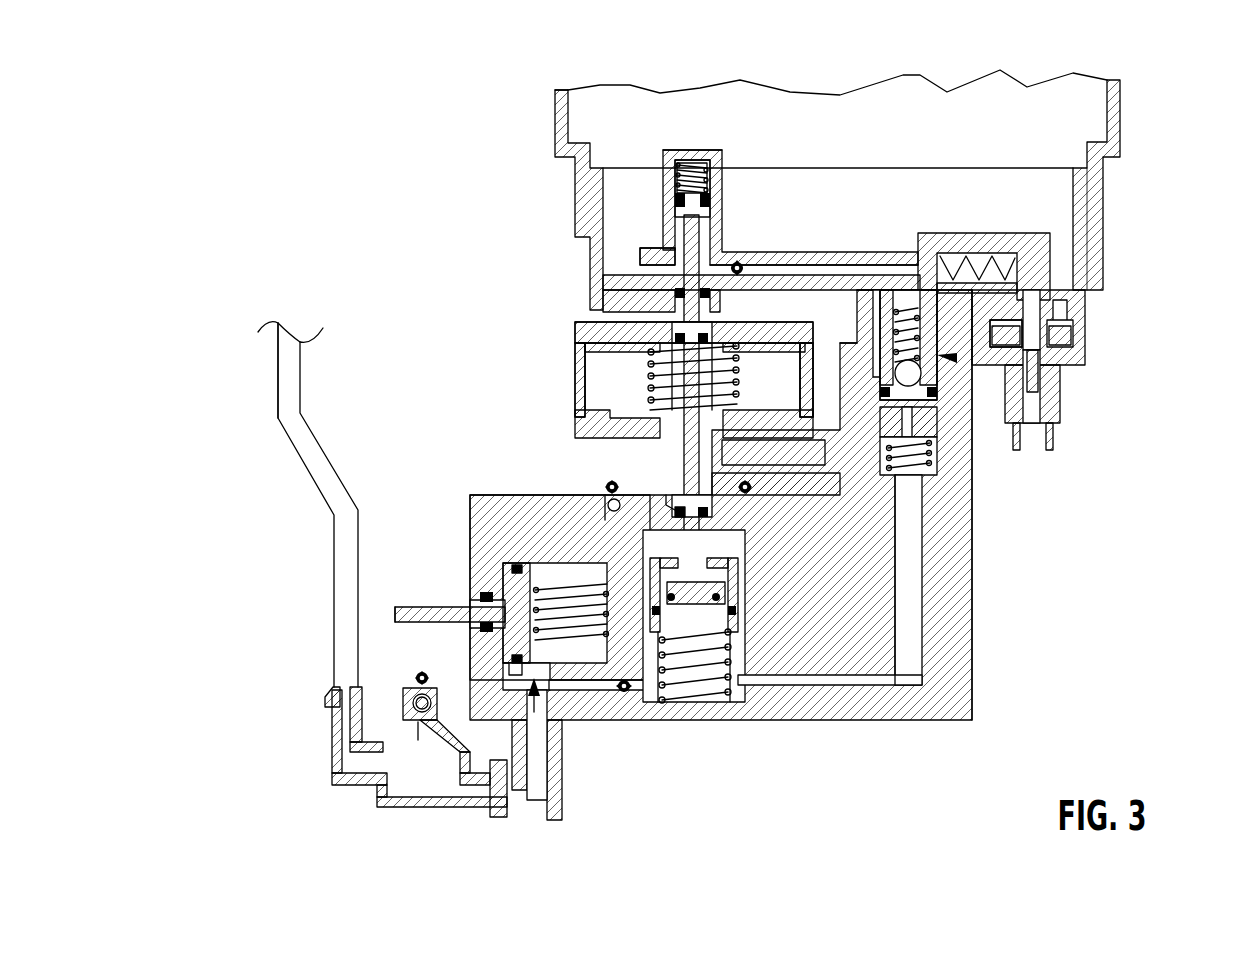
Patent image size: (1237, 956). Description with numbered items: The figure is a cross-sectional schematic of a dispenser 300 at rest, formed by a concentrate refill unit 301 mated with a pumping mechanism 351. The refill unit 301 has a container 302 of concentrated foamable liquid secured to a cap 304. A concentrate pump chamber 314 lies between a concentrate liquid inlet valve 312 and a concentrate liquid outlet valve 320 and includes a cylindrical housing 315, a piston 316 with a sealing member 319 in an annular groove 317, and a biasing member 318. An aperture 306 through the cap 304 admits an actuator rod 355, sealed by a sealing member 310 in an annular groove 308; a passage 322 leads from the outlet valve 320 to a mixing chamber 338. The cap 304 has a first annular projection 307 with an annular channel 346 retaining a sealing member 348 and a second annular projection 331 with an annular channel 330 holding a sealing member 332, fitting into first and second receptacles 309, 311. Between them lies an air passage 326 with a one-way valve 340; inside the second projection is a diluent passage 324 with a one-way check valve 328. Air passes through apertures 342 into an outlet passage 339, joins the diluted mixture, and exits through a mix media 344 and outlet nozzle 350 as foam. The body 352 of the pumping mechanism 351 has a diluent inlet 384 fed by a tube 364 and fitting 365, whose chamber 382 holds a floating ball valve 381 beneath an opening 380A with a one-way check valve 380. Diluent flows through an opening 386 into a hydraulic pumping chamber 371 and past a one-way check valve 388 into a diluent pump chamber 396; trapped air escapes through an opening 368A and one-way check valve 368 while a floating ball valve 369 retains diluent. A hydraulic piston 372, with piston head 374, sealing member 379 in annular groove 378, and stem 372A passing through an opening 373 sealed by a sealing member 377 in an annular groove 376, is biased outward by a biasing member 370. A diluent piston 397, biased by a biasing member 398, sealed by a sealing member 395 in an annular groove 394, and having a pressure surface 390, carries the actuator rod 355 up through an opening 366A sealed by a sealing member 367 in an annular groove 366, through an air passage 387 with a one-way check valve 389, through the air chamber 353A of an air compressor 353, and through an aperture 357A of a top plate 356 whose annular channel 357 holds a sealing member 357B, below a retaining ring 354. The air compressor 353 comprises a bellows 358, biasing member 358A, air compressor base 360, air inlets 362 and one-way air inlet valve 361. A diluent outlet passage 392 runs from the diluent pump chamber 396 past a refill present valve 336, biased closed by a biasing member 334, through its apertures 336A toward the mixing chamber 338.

The dispenser 300 is at (285, 122).
The concentrate refill unit 301 is at (590, 70).
The container 302 is at (560, 108).
The cap 304 is at (596, 217).
The aperture 306 is at (720, 303).
The first annular projection 307 is at (858, 303).
The annular groove 308 is at (645, 255).
The sealing member 310 is at (657, 256).
The second receptacle 311 is at (835, 392).
The first receptacle 309 is at (808, 348).
The concentrate liquid inlet valve 312 is at (668, 208).
The concentrate pump chamber 314 is at (678, 200).
The cylindrical housing 315 is at (740, 262).
The piston 316 is at (662, 150).
The annular groove 317 is at (680, 175).
The sealing member 319 is at (692, 178).
The biasing member 318 is at (692, 165).
The concentrate liquid outlet valve 320 is at (835, 272).
The passage 322 is at (905, 290).
The diluent passage 324 is at (965, 305).
The air passage 326 is at (1033, 300).
The one-way check valve 328 is at (925, 385).
The annular channel 330 is at (935, 335).
The sealing member 332 is at (908, 345).
The second annular projection 331 is at (960, 358).
The biasing member 334 is at (905, 370).
The refill present valve 336 is at (912, 445).
The apertures 336A is at (912, 418).
The mixing chamber 338 is at (1078, 240).
The outlet passage 339 is at (1060, 270).
The one-way valve 340 is at (1062, 300).
The apertures 342 is at (1062, 330).
The mix media 344 is at (1040, 400).
The annular channel 346 is at (1008, 347).
The sealing member 348 is at (1006, 333).
The outlet nozzle 350 is at (1030, 440).
The pumping mechanism 351 is at (960, 760).
The body 352 is at (972, 695).
The air compressor 353 is at (594, 334).
The air chamber 353A is at (582, 336).
The retaining ring 354 is at (662, 330).
The actuator rod 355 is at (665, 341).
The top plate 356 is at (665, 392).
The annular channel 357 is at (660, 328).
The aperture 357A is at (580, 380).
The sealing member 357B is at (806, 380).
The bellows 358 is at (588, 360).
The biasing member 358A is at (665, 374).
The air compressor base 360 is at (622, 432).
The one-way air inlet valve 361 is at (600, 397).
The air inlets 362 is at (578, 436).
The tube 364 is at (318, 470).
The fitting 365 is at (428, 807).
The annular groove 366 is at (608, 490).
The sealing member 367 is at (680, 512).
The opening 366A is at (675, 503).
The one-way check valve 368 is at (609, 484).
The opening 368A is at (612, 503).
The floating ball valve 369 is at (603, 508).
The biasing member 370 is at (595, 547).
The hydraulic pumping chamber 371 is at (540, 585).
The hydraulic piston 372 is at (400, 590).
The stem 372A is at (398, 610).
The opening 373 is at (518, 597).
The piston head 374 is at (482, 590).
The annular groove 376 is at (480, 630).
The sealing member 377 is at (486, 627).
The annular groove 378 is at (508, 657).
The sealing member 379 is at (517, 569).
The one-way check valve 380 is at (416, 676).
The opening 380A is at (413, 699).
The floating ball valve 381 is at (408, 712).
The chamber 382 is at (416, 768).
The diluent inlet 384 is at (530, 795).
The opening 386 is at (553, 735).
The air passage 387 is at (760, 490).
The one-way check valve 388 is at (626, 692).
The one-way check valve 389 is at (790, 493).
The surface 390 is at (880, 545).
The diluent outlet passage 392 is at (912, 637).
The annular groove 394 is at (738, 612).
The sealing member 395 is at (696, 593).
The diluent pump chamber 396 is at (658, 690).
The diluent piston 397 is at (700, 668).
The biasing member 398 is at (692, 705).